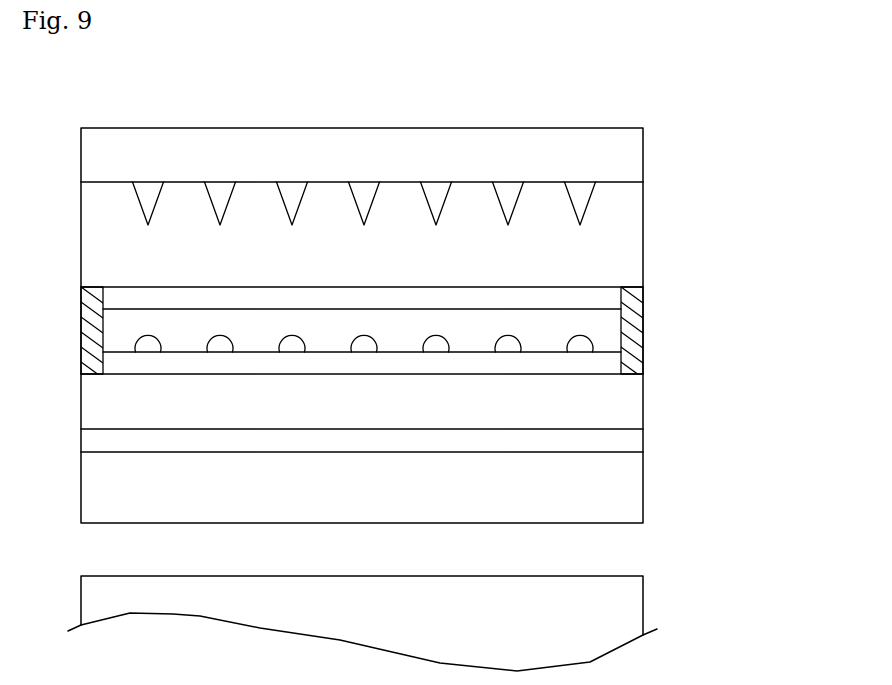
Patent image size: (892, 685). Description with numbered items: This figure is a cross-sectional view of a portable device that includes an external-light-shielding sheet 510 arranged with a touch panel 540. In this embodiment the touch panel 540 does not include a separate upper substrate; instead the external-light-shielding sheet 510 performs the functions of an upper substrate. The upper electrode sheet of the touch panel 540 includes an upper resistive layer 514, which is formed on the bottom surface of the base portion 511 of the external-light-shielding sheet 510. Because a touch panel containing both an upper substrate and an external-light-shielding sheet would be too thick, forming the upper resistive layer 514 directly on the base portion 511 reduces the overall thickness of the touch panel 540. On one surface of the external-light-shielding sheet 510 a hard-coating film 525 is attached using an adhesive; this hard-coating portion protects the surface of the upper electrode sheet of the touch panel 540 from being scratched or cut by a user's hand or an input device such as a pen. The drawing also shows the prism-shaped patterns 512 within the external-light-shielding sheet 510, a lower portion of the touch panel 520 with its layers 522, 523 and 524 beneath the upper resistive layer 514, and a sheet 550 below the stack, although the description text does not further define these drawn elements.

The external-light-shielding sheet 510 is at (746, 211).
The base portion 511 is at (617, 247).
The prism grooves 512 is at (588, 200).
The upper resistive layer 514 is at (602, 293).
The lower panel 520 is at (743, 358).
The lower substrate 522 is at (628, 493).
The lower electrode layer 523 is at (627, 397).
The phosphor layer 524 is at (597, 360).
The hard-coating film 525 is at (613, 153).
The touch panel 540 is at (775, 287).
The reflective sheet 550 is at (628, 593).